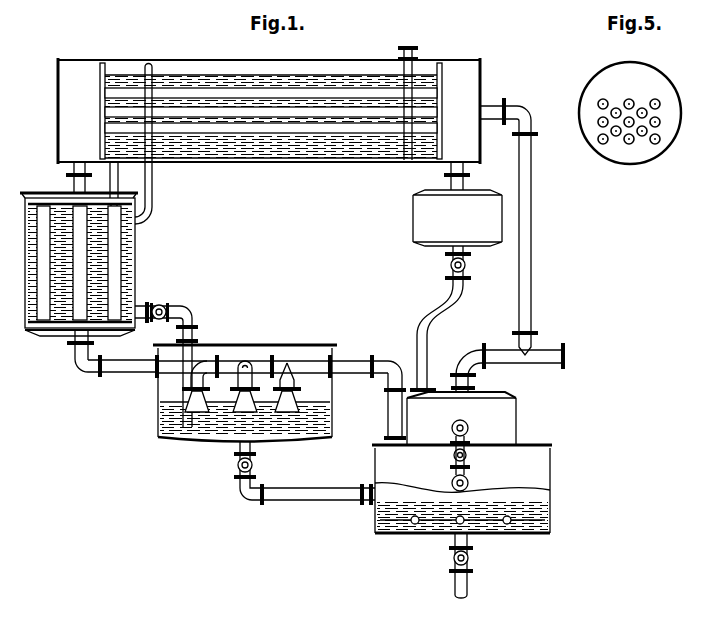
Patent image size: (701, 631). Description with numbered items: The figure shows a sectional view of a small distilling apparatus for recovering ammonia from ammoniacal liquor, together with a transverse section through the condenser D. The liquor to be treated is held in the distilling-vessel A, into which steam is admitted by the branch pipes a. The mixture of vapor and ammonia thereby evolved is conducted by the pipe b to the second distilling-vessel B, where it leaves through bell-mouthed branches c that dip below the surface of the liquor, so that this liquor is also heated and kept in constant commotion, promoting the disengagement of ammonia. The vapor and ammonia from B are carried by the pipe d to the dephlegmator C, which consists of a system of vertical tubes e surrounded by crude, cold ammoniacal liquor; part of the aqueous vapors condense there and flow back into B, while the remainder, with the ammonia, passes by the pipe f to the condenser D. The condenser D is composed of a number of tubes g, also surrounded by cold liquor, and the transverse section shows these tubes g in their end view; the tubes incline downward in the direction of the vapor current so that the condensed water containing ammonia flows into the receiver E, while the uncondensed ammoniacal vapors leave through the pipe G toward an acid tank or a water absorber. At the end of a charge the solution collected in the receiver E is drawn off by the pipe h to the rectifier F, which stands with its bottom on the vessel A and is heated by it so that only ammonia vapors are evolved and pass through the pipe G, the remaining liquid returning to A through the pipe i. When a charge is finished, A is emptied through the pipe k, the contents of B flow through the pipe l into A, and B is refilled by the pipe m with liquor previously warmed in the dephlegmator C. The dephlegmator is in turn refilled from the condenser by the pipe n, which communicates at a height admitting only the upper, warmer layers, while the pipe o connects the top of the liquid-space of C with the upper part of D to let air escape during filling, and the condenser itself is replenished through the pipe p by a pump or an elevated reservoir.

In FIG. 1, the condenser D is at (294, 101).
In FIG. 5, the condenser D is at (630, 113).
In FIG. 1, the tubes g is at (271, 112).
In FIG. 5, the tubes g is at (628, 118).
In FIG. 1, the pipe p is at (408, 94).
In FIG. 1, the pipe f is at (74, 177).
In FIG. 1, the pipe n is at (121, 240).
In FIG. 1, the pipe o is at (150, 144).
In FIG. 1, the dephlegmator C is at (72, 264).
In FIG. 1, the vertical tubes e is at (79, 263).
In FIG. 1, the pipe m is at (174, 364).
In FIG. 1, the pipe d is at (112, 361).
In FIG. 1, the pipe b is at (280, 396).
In FIG. 1, the second distilling-vessel B is at (245, 382).
In FIG. 1, the bell-mouthed branches c is at (241, 386).
In FIG. 1, the pipe l is at (296, 496).
In FIG. 1, the distilling-vessel A is at (462, 489).
In FIG. 1, the branch pipes a is at (437, 530).
In FIG. 1, the pipe k is at (464, 565).
In FIG. 1, the rectifier F is at (461, 418).
In FIG. 1, the pipe i is at (464, 455).
In FIG. 1, the receiver E is at (457, 204).
In FIG. 1, the pipe h is at (432, 316).
In FIG. 1, the pipe G is at (467, 356).